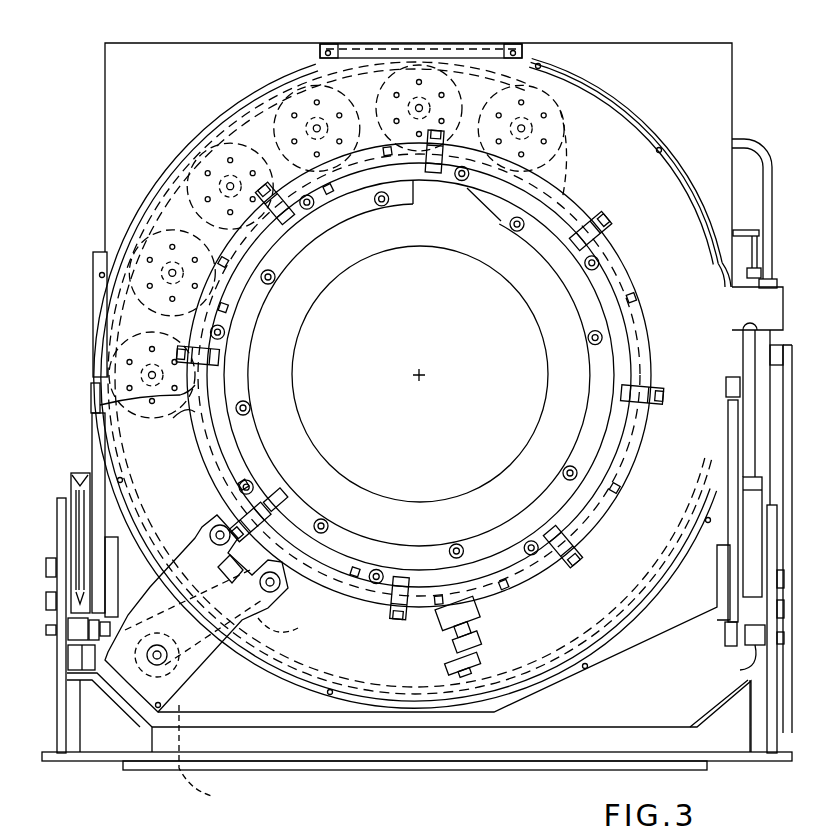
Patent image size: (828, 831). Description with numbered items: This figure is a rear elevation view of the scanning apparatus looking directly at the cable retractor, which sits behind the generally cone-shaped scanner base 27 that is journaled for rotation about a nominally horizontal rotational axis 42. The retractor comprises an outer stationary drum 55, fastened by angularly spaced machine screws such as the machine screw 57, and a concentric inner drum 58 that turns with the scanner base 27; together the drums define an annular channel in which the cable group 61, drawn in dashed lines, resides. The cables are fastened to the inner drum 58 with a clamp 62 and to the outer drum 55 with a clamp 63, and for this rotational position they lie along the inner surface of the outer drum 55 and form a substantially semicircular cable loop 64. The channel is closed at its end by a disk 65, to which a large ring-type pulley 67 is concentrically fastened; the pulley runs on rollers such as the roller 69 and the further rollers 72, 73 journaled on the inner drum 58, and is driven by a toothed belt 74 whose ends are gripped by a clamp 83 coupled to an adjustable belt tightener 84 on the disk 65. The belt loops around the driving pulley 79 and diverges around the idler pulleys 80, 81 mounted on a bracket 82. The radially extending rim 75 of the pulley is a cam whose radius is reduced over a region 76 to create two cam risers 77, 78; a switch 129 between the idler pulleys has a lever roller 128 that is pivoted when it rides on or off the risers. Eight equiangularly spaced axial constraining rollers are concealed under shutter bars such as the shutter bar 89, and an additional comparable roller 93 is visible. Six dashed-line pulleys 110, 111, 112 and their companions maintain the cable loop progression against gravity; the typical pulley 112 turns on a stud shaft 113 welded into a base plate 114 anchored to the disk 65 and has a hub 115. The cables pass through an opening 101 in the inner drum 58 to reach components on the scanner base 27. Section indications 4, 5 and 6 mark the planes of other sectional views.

The section line 4- 4 is at (190, 330).
The section line 5- 5 is at (362, 677).
The section line 6- 6 is at (183, 107).
The scanner base 27 is at (504, 288).
The rotational axis 42 is at (423, 373).
The outer stationary drum 55 is at (691, 200).
The machine screw 57 is at (660, 139).
The inner drum 58 is at (417, 791).
The cable group 61 is at (622, 636).
The clamp 62 is at (497, 210).
The clamp 63 is at (726, 382).
The cable loop 64 is at (556, 128).
The disk 65 is at (522, 652).
The ring-type pulley 67 is at (504, 604).
The roller 69 is at (310, 206).
The roller 72 is at (586, 268).
The roller 73 is at (534, 538).
The toothed belt 74 is at (233, 652).
The rim (cam) 75 is at (632, 477).
The reduced radius region 76 is at (541, 583).
The cam riser 77 is at (178, 414).
The cam riser 78 is at (650, 346).
The driving pulley 79 is at (207, 760).
The idler pulley 80 is at (272, 620).
The idler pulley 81 is at (198, 527).
The bracket 82 is at (158, 590).
The clamp 83 is at (458, 645).
The adjustable belt tightener 84 is at (462, 670).
The shutter bar 89 is at (208, 362).
The roller 93 is at (100, 405).
The opening 101 is at (412, 243).
The pulley 110 is at (100, 326).
The pulley 111 is at (120, 213).
The pulley 112 is at (232, 130).
The stud shaft 113 is at (272, 110).
The base plate 114 is at (381, 40).
The hub 115 is at (498, 48).
The roller 128 is at (252, 524).
The switch 129 is at (270, 552).